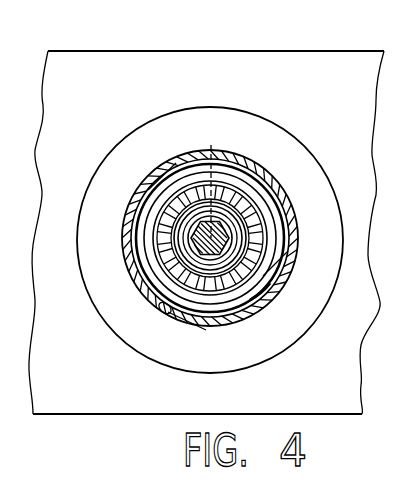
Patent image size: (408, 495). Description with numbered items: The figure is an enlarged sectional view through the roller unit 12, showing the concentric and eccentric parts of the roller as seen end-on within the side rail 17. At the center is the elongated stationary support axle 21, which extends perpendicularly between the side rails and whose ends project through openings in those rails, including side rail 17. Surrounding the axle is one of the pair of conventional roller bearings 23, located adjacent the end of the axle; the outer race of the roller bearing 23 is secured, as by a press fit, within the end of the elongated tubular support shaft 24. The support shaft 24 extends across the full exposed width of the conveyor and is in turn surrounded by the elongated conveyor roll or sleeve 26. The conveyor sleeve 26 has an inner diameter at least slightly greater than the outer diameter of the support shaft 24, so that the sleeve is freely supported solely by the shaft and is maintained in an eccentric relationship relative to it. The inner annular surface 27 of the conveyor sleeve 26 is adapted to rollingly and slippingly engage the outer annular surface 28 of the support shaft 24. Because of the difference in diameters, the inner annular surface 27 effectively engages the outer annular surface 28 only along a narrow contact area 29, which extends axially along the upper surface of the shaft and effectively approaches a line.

The roller unit 12 is at (206, 251).
The side rail 17 is at (236, 83).
The stationary support axle 21 is at (222, 232).
The roller bearing 23 is at (248, 266).
The tubular support shaft 24 is at (147, 288).
The conveyor sleeve 26 is at (251, 316).
The inner annular surface 27 is at (160, 312).
The outer annular surface 28 is at (207, 312).
The narrow contact area 29 is at (211, 163).